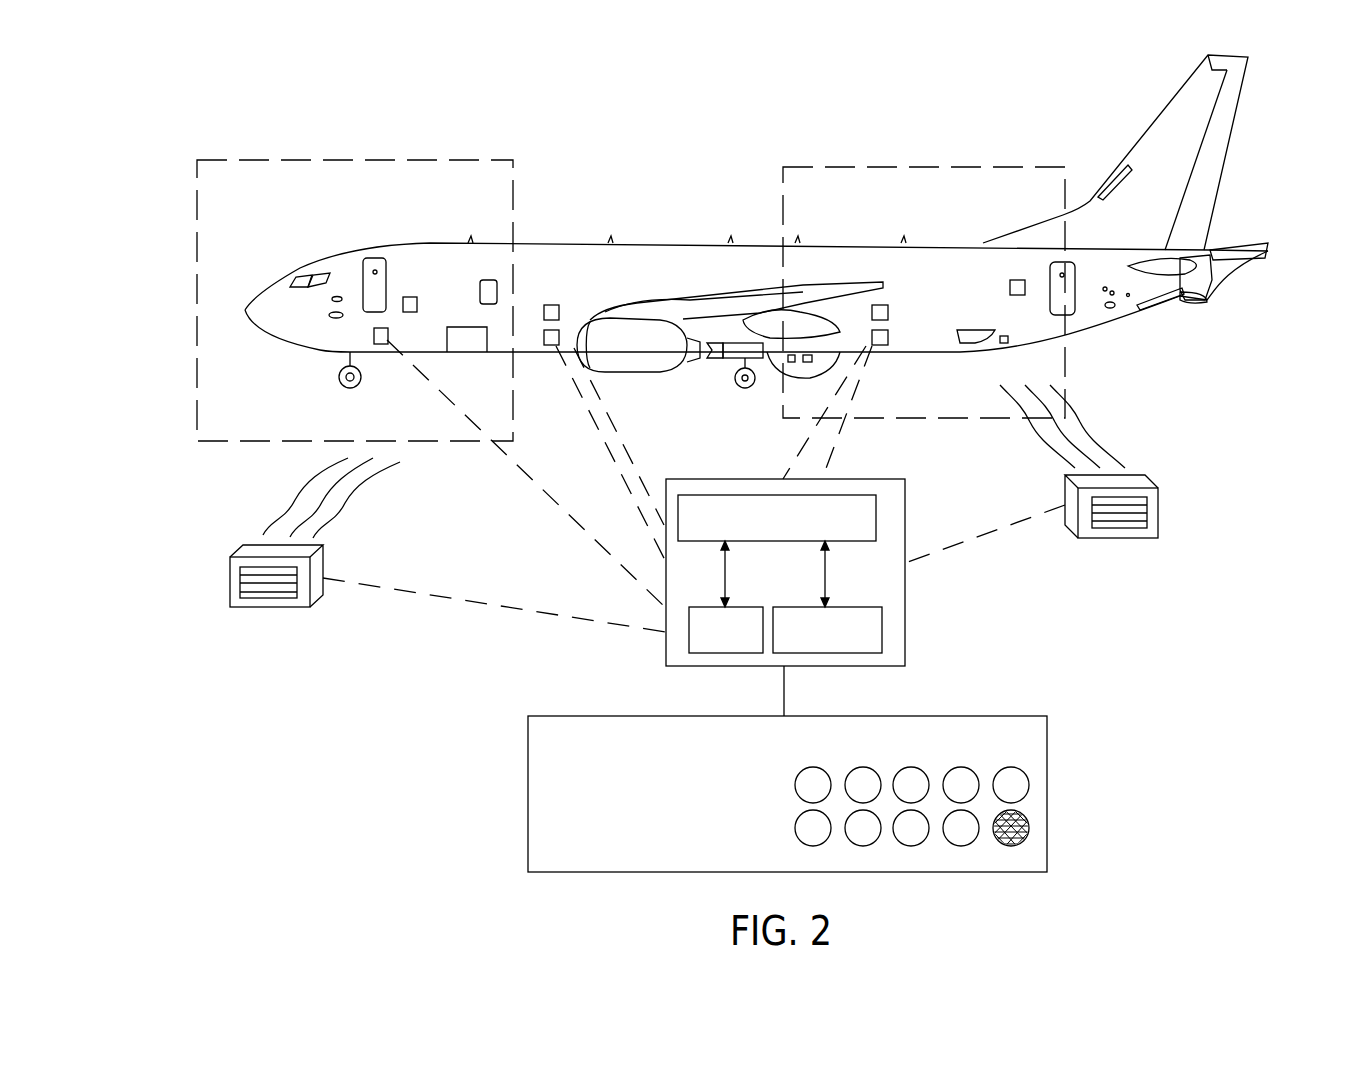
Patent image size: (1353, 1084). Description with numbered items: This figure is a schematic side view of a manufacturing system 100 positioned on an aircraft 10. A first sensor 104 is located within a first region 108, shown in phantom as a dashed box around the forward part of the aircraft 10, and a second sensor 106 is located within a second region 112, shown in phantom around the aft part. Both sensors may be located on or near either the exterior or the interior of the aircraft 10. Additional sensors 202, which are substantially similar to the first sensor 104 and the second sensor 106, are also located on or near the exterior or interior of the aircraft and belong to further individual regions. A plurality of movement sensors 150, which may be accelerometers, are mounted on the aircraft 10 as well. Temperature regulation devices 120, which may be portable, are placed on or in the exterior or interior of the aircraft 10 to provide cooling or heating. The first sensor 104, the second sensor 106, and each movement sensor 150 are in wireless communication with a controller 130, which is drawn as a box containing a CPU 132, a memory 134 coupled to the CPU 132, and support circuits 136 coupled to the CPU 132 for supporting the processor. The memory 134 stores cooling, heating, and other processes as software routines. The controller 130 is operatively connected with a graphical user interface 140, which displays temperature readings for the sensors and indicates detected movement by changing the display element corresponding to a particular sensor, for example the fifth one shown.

The manufacturing system 100 is at (225, 107).
The aircraft 10 is at (660, 240).
The first region 108 is at (373, 158).
The second region 112 is at (900, 167).
The first sensor 104 is at (380, 346).
The second sensor 106 is at (880, 346).
The movement sensor 150 is at (408, 297).
The additional sensor 202 is at (551, 304).
The temperature regulation device 120 is at (230, 578).
The controller 130 is at (905, 578).
The CPU 132 is at (726, 653).
The memory 134 is at (882, 628).
The support circuits 136 is at (876, 518).
The graphical user interface 140 is at (1047, 790).